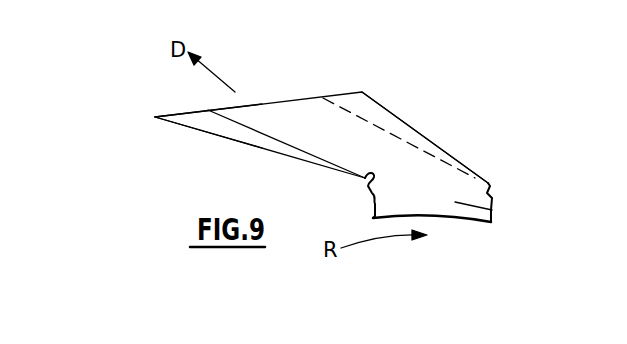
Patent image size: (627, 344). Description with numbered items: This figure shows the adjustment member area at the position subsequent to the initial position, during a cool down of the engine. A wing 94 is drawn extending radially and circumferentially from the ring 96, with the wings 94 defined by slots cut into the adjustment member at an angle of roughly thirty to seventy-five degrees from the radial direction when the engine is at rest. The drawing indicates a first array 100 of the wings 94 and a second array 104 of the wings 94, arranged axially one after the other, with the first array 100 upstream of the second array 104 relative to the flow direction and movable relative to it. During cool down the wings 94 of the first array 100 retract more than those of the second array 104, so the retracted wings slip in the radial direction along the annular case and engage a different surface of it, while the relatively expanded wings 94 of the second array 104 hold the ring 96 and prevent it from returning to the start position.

The first array 100 is at (293, 100).
The second array 104 is at (180, 112).
The wing 94 is at (393, 160).
The ring 96 is at (493, 210).